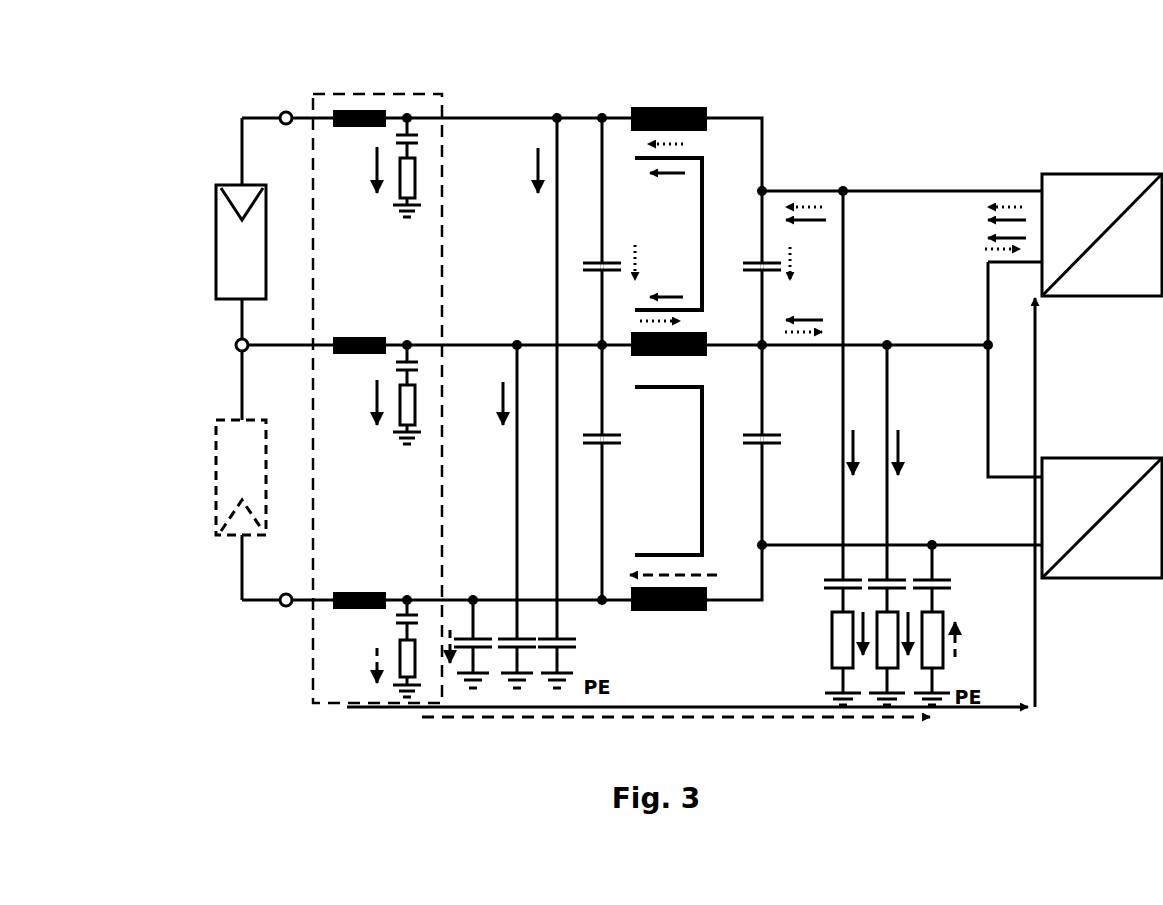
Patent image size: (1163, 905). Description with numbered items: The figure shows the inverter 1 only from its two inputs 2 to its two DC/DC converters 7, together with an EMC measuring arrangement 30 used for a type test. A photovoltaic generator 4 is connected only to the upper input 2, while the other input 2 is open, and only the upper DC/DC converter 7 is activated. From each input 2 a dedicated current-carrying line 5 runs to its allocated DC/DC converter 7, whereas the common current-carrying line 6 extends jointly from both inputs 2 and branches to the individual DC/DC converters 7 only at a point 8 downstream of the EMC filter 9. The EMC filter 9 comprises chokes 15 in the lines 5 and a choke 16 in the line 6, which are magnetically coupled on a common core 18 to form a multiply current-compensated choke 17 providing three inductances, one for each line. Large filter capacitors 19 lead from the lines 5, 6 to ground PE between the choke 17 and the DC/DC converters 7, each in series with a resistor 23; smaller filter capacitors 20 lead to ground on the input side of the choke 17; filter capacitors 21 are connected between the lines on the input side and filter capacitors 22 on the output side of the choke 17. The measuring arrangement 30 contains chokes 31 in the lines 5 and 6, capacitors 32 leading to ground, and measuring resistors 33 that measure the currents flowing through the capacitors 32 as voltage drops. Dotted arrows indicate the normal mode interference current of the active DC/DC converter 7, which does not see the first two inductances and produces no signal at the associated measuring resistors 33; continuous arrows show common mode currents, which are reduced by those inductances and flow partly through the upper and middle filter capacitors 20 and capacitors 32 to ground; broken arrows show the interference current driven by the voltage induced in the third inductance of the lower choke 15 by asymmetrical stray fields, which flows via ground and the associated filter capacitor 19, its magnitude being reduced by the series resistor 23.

The inverter 1 is at (866, 124).
The inputs 2 is at (285, 111).
The photovoltaic generator 4 is at (215, 238).
The current-carrying lines 5 is at (497, 116).
The current-carrying line 6 is at (476, 342).
The DC/DC converter 7 is at (1106, 172).
The point 8 is at (993, 342).
The EMC filter 9 is at (693, 353).
The chokes 15 is at (703, 133).
The choke 16 is at (700, 357).
The multiply current-compensated choke 17 is at (693, 353).
The common core 18 is at (700, 239).
The filter capacitors 19 is at (833, 578).
The filter capacitors 20 is at (488, 598).
The filter capacitors 21 is at (596, 260).
The filter capacitors 22 is at (755, 258).
The resistors 23 is at (832, 646).
The EMC measuring arrangement 30 is at (311, 681).
The chokes 31 is at (355, 128).
The capacitors 32 is at (418, 145).
The measuring resistors 33 is at (416, 184).